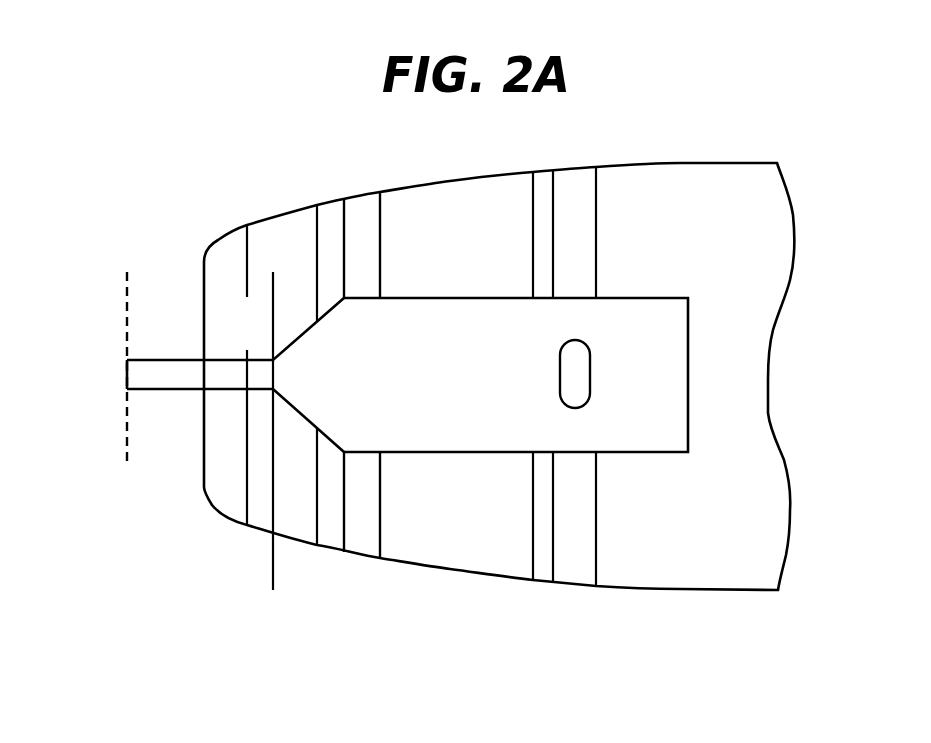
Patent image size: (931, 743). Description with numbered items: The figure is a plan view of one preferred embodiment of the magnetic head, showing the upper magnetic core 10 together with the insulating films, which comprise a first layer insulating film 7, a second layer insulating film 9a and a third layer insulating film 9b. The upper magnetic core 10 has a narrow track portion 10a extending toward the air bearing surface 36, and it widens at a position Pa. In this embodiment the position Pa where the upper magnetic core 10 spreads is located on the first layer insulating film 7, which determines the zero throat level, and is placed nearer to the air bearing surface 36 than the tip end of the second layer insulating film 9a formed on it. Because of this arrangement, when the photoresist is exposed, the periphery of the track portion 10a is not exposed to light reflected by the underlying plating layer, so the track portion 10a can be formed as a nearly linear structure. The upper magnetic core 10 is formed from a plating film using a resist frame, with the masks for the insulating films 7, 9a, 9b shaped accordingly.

The air bearing surface 36 is at (126, 298).
The track portion 10a is at (221, 368).
The upper magnetic core 10 is at (476, 309).
The position where the upper magnetic core spreads Pa is at (273, 415).
The first layer insulating film 7 is at (328, 541).
The second layer insulating film 9a is at (365, 549).
The third layer insulating film 9b is at (474, 560).